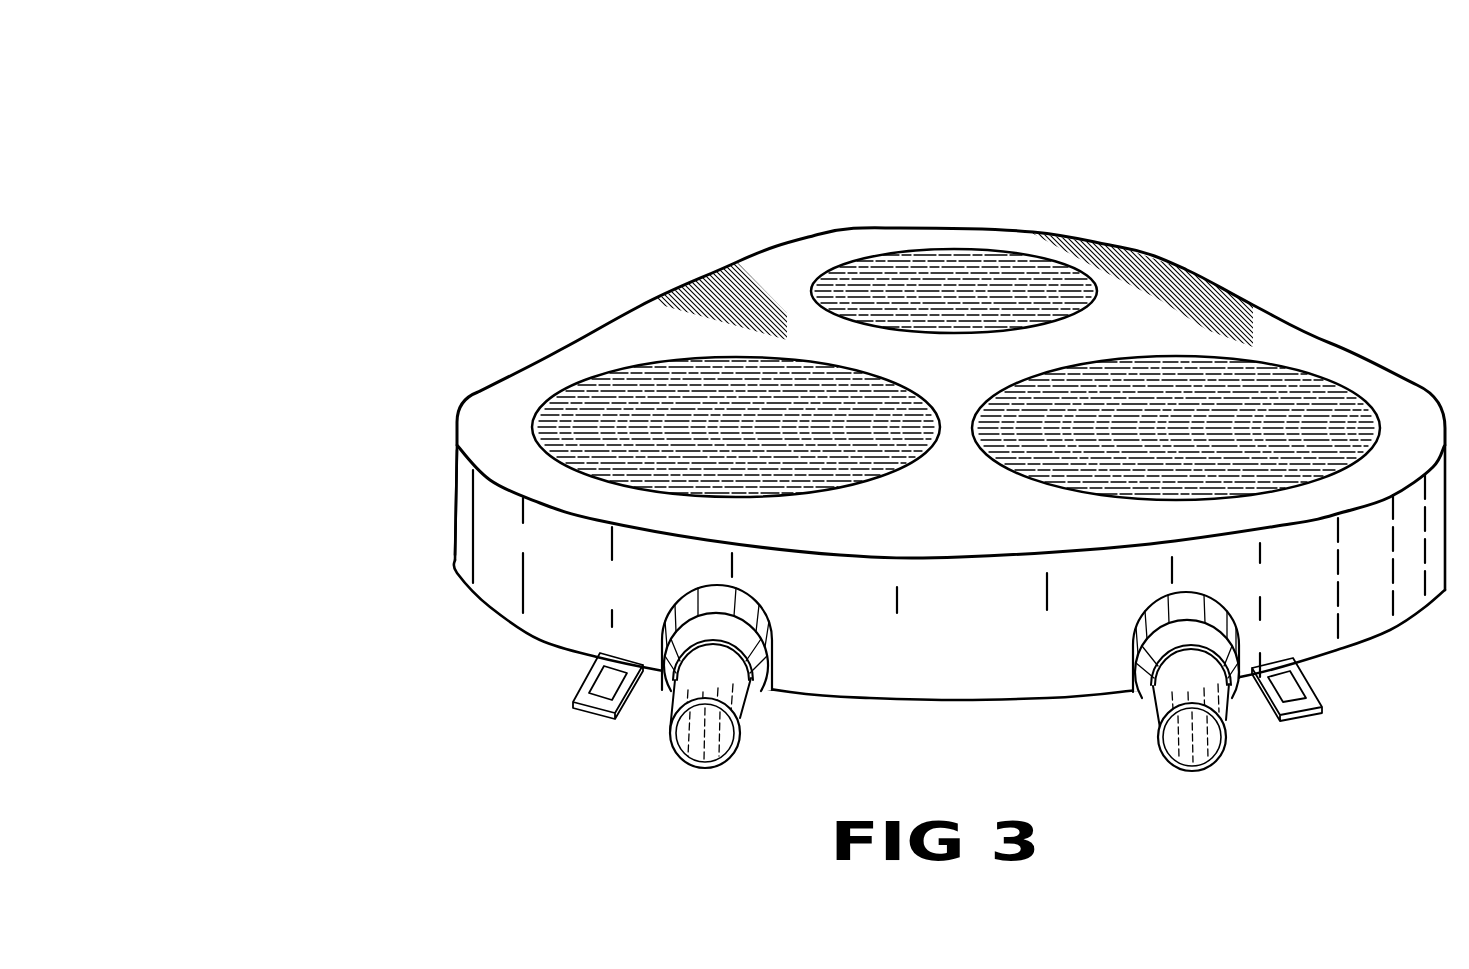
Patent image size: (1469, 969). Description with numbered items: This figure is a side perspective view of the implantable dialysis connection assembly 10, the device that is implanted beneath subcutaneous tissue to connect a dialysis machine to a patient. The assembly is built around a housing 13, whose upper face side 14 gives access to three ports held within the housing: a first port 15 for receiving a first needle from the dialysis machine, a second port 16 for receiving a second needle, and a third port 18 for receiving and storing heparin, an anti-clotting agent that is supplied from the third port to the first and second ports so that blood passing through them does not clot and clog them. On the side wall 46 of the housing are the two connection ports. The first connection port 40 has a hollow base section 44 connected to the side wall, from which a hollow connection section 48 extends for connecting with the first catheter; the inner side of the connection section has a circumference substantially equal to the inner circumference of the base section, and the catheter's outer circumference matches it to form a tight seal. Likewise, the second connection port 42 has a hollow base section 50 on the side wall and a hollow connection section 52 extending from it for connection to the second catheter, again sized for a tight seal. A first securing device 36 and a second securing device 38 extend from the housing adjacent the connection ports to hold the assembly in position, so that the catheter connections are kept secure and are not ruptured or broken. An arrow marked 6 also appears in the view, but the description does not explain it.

The direction toward housing 6 is at (291, 469).
The implantable dialysis connection assembly 10 is at (814, 163).
The housing 13 is at (657, 300).
The face side 14 is at (1290, 343).
The first port 15 is at (1355, 413).
The second port 16 is at (573, 422).
The third port 18 is at (972, 262).
The first securing device 36 is at (1323, 697).
The second securing device 38 is at (567, 693).
The first connection port 40 is at (1147, 707).
The second connection port 42 is at (740, 726).
The hollow base section 44 is at (1213, 613).
The side wall 46 is at (947, 660).
The connection section 48 is at (1220, 702).
The hollow base section 50 is at (753, 617).
The connection section 52 is at (670, 703).